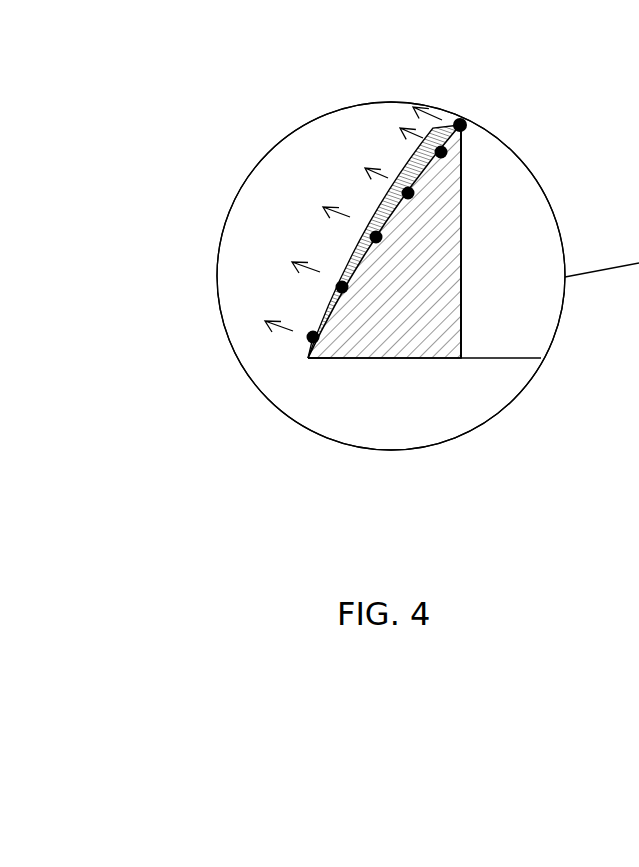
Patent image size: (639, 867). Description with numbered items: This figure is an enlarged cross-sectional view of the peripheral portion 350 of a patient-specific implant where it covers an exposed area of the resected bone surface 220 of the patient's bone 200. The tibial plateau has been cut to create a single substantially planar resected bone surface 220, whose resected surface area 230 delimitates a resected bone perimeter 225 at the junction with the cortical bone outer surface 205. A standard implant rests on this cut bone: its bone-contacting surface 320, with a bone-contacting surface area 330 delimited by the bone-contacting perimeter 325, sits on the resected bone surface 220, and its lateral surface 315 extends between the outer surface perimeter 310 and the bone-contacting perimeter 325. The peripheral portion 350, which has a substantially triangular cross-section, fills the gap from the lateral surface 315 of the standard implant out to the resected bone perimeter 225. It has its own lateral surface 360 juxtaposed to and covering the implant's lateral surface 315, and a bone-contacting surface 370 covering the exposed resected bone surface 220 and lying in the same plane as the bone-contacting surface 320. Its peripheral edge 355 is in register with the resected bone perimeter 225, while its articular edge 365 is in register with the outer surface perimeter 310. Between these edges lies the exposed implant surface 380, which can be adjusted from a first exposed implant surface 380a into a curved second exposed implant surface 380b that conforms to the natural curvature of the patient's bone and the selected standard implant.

The bone 200 is at (368, 433).
The cortical bone outer surface 205 is at (329, 392).
The resected bone surface 220 is at (278, 232).
The resected surface area 230 is at (355, 358).
The resected bone perimeter 225 is at (308, 360).
The outer surface perimeter 310 is at (463, 122).
The lateral surface 315 is at (457, 178).
The bone-contacting surface 320 is at (536, 401).
The bone-contacting surface area 330 is at (510, 361).
The bone-contacting perimeter 325 is at (462, 360).
The peripheral portion 350 is at (402, 273).
The peripheral edge 355 is at (308, 359).
The lateral surface 360 is at (463, 213).
The articular edge 365 is at (458, 120).
The bone-contacting surface 370 is at (400, 363).
The exposed implant surface 380 is at (280, 241).
The first exposed implant surface 380a is at (404, 198).
The second exposed implant surface 380b is at (370, 238).